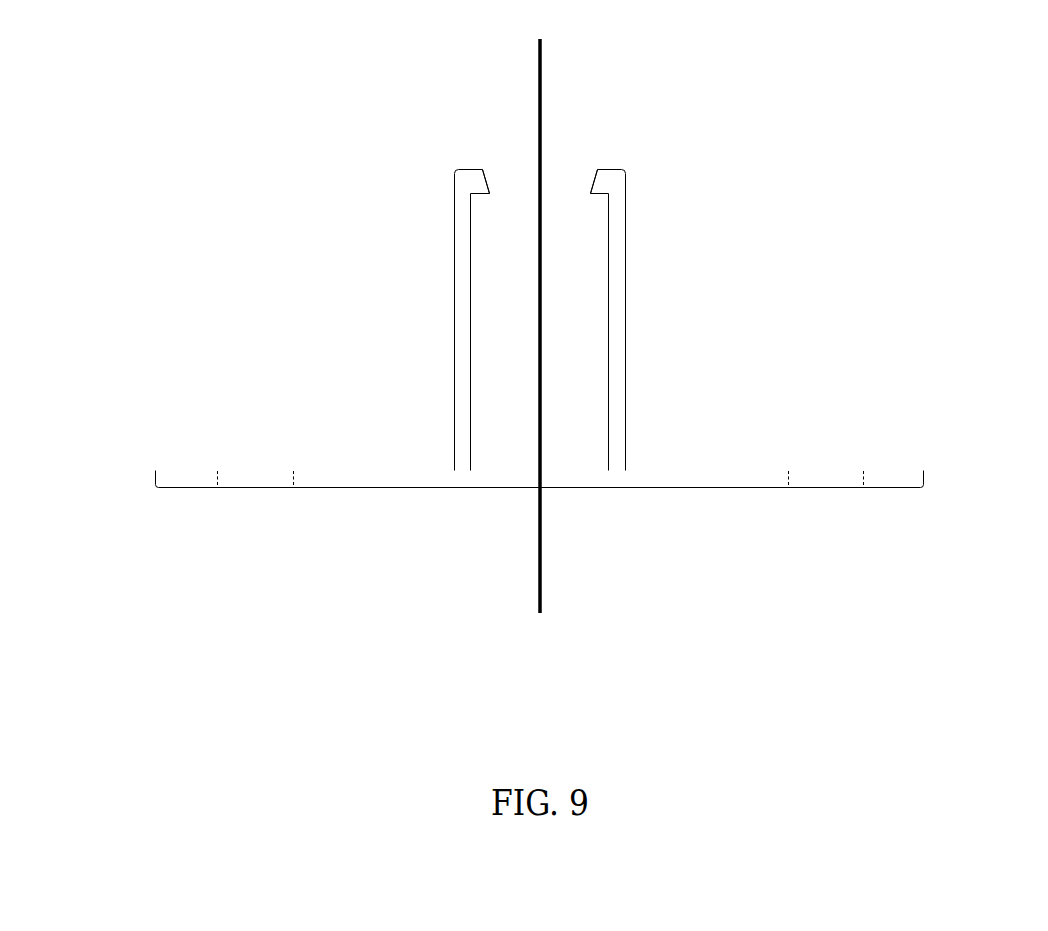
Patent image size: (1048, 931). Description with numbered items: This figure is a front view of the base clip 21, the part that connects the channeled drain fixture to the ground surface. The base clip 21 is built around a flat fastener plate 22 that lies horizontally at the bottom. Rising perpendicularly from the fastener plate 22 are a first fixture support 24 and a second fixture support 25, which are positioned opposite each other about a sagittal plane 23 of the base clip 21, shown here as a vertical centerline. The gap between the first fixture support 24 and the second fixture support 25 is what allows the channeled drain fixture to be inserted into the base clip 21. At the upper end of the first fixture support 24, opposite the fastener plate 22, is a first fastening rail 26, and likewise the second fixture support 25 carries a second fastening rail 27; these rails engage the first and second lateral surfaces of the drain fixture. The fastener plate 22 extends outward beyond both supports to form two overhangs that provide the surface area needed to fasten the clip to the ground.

The base clip 21 is at (589, 376).
The fastener plate 22 is at (315, 482).
The sagittal plane 23 is at (540, 578).
The first fixture support 24 is at (457, 322).
The second fixture support 25 is at (622, 353).
The first fastening rail 26 is at (483, 192).
The second fastening rail 27 is at (597, 192).